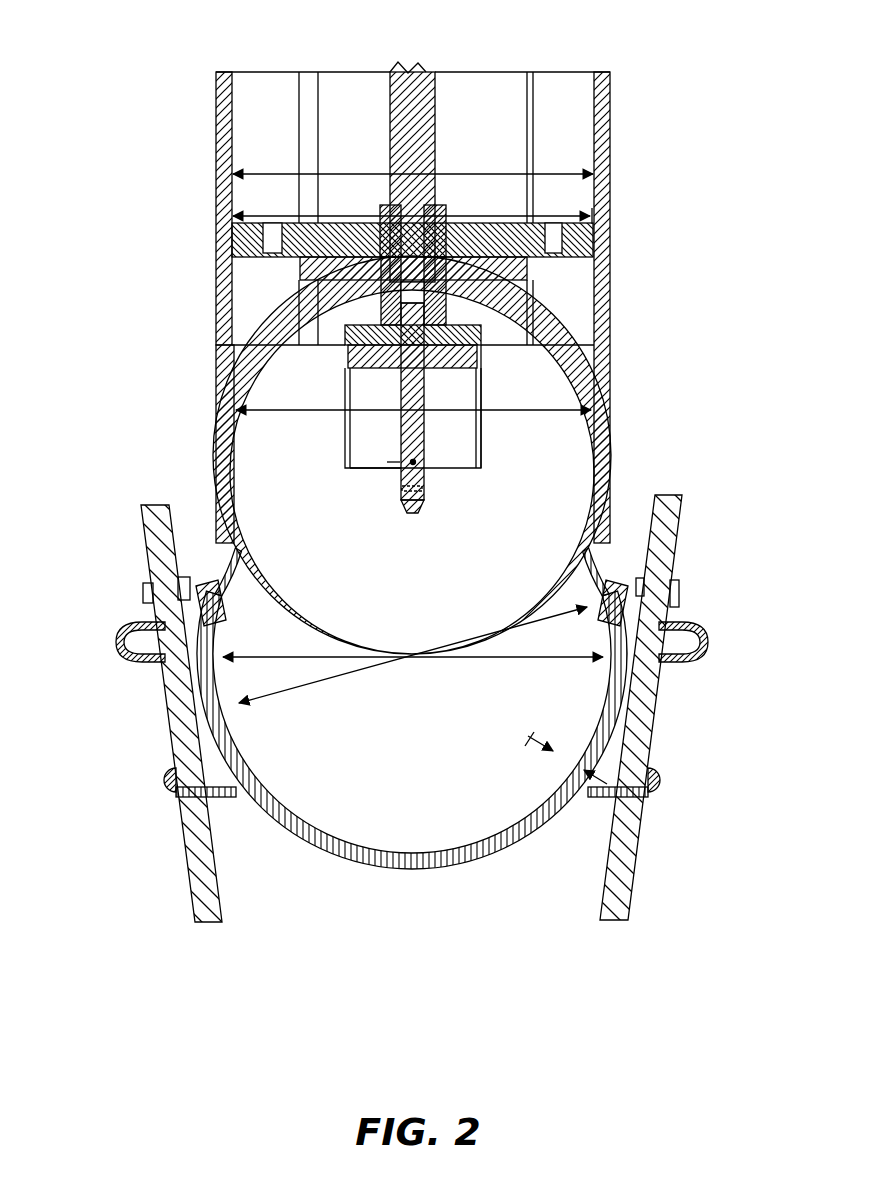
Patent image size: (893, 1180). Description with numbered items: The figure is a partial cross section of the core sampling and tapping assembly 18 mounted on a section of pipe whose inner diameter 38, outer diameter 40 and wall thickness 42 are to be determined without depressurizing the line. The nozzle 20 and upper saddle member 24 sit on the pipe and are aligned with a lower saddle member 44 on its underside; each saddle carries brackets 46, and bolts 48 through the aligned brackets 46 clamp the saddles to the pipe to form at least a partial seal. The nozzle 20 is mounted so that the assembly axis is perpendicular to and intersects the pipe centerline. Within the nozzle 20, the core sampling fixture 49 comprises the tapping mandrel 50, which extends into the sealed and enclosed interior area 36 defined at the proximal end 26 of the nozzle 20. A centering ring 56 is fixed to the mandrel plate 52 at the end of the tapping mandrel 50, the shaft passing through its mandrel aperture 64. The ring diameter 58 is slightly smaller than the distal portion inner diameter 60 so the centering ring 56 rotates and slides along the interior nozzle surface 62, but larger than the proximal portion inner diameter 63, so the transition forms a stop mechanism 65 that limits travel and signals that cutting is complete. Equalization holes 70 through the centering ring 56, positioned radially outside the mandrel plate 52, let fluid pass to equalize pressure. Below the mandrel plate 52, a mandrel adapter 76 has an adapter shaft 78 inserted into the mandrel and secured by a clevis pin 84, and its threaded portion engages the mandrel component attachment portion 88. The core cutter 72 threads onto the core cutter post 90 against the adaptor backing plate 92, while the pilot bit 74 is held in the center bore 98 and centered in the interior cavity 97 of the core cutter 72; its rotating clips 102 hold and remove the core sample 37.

The core sampling and tapping assembly 18 is at (185, 90).
The core sampling fixture 49 is at (413, 67).
The interior nozzle surface 62 is at (232, 92).
The nozzle 20 is at (610, 102).
The proximal end 26 is at (216, 492).
The sealed and enclosed interior area 36 is at (502, 88).
The tapping mandrel 50 is at (426, 72).
The mandrel aperture 64 is at (380, 205).
The clevis pin 84 is at (445, 228).
The distal portion inner diameter 60 is at (486, 174).
The ring diameter 58 is at (466, 216).
The centering ring 56 is at (232, 240).
The equalization holes 70 is at (272, 250).
The mandrel component attachment portion 88 is at (382, 296).
The adapter shaft 78 is at (444, 296).
The mandrel plate 52 is at (516, 282).
The stop mechanism 65 is at (232, 345).
The mandrel adapter 76 is at (348, 337).
The adaptor backing plate 92 is at (350, 360).
The core cutter post 90 is at (430, 370).
The center bore 98 is at (478, 336).
The proximal portion inner diameter 63 is at (482, 416).
The core cutter 72 is at (345, 432).
The interior cavity 97 is at (390, 445).
The core sample 37 is at (365, 478).
The rotating clips 102 is at (418, 465).
The pilot bit 74 is at (414, 513).
The inner diameter 38 is at (448, 640).
The outer diameter 40 is at (496, 660).
The wall thickness 42 is at (557, 758).
The lower saddle member 44 is at (543, 840).
The upper saddle member 24 is at (615, 560).
The bolts 48 is at (678, 540).
The brackets 46 is at (702, 634).